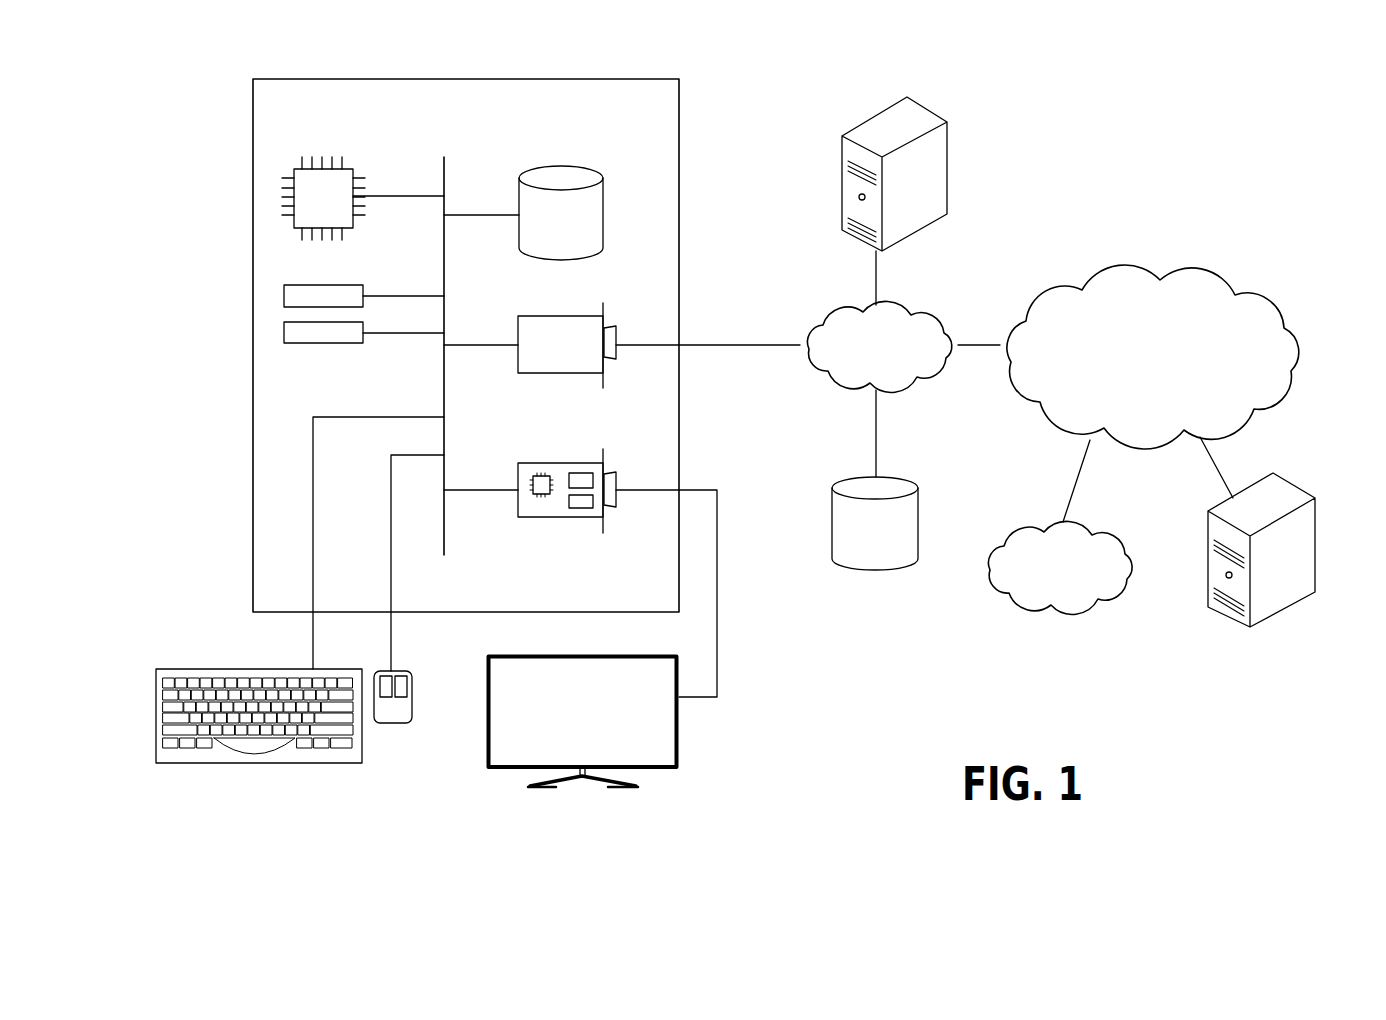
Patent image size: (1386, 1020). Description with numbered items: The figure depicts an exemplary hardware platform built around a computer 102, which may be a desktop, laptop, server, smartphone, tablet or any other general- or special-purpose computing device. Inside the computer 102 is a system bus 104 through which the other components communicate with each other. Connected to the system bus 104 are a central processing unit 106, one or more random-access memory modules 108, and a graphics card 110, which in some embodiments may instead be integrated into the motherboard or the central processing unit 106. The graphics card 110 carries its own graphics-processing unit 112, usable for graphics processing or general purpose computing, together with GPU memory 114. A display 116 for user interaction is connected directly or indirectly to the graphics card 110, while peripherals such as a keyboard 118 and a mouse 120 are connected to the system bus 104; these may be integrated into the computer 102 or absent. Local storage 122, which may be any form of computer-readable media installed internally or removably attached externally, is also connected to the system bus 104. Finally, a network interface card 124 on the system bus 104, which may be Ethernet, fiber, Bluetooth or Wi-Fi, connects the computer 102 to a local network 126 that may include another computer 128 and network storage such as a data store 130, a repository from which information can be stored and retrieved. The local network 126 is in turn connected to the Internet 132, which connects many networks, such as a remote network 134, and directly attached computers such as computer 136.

The computer 102 is at (633, 79).
The system bus 104 is at (445, 168).
The central processing unit 106 is at (347, 167).
The random-access memory modules 108 is at (363, 293).
The graphics card 110 is at (517, 475).
The graphics-processing unit 112 is at (542, 495).
The GPU memory 114 is at (578, 507).
The display 116 is at (679, 750).
The keyboard 118 is at (262, 763).
The mouse 120 is at (390, 725).
The local storage 122 is at (607, 200).
The network interface card 124 is at (517, 327).
The local network 126 is at (930, 299).
The computer 128 is at (933, 110).
The data store 130 is at (907, 479).
The Internet 132 is at (1197, 262).
The remote network 134 is at (1117, 520).
The computer 136 is at (1290, 480).